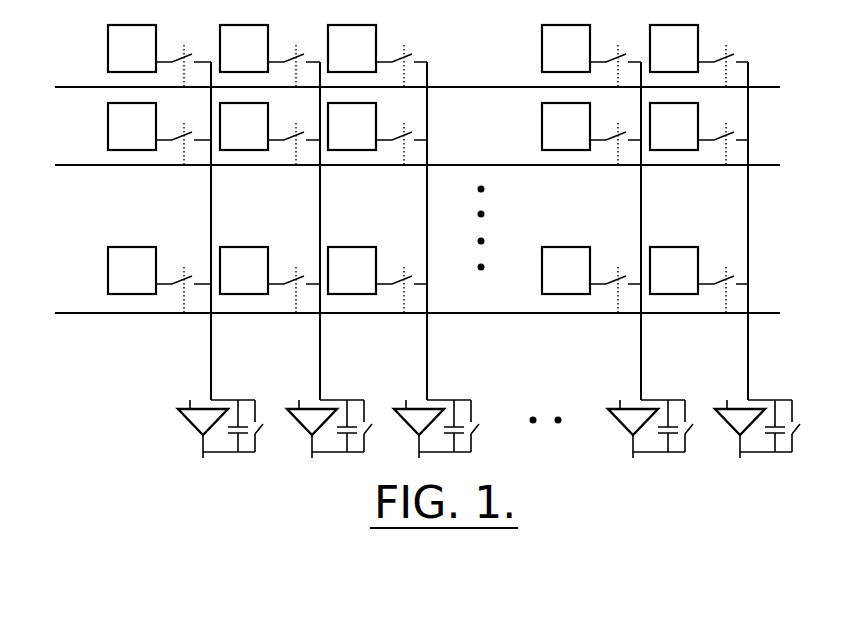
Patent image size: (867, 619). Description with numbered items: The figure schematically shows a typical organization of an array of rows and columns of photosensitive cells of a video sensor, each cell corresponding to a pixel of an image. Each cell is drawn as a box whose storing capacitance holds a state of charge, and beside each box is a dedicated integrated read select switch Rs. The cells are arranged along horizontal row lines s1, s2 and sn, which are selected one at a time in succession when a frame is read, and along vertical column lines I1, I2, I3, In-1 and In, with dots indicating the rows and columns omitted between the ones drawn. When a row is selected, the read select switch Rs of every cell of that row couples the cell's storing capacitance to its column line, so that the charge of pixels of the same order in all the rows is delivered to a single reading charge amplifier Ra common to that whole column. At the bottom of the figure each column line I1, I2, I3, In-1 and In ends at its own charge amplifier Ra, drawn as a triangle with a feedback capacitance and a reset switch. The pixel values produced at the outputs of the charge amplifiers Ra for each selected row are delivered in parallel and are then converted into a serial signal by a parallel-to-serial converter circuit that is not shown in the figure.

The read select switch Rs is at (108, 264).
The reading charge amplifier Ra is at (192, 425).
The first row select line s1 is at (403, 86).
The second row select line s2 is at (403, 164).
The n-th row select line sn is at (403, 313).
The first column readout line I1 is at (197, 231).
The second column readout line I2 is at (305, 231).
The third column readout line I3 is at (412, 231).
The (n-1)-th column readout line In-1 is at (621, 231).
The n-th column readout line In is at (733, 231).